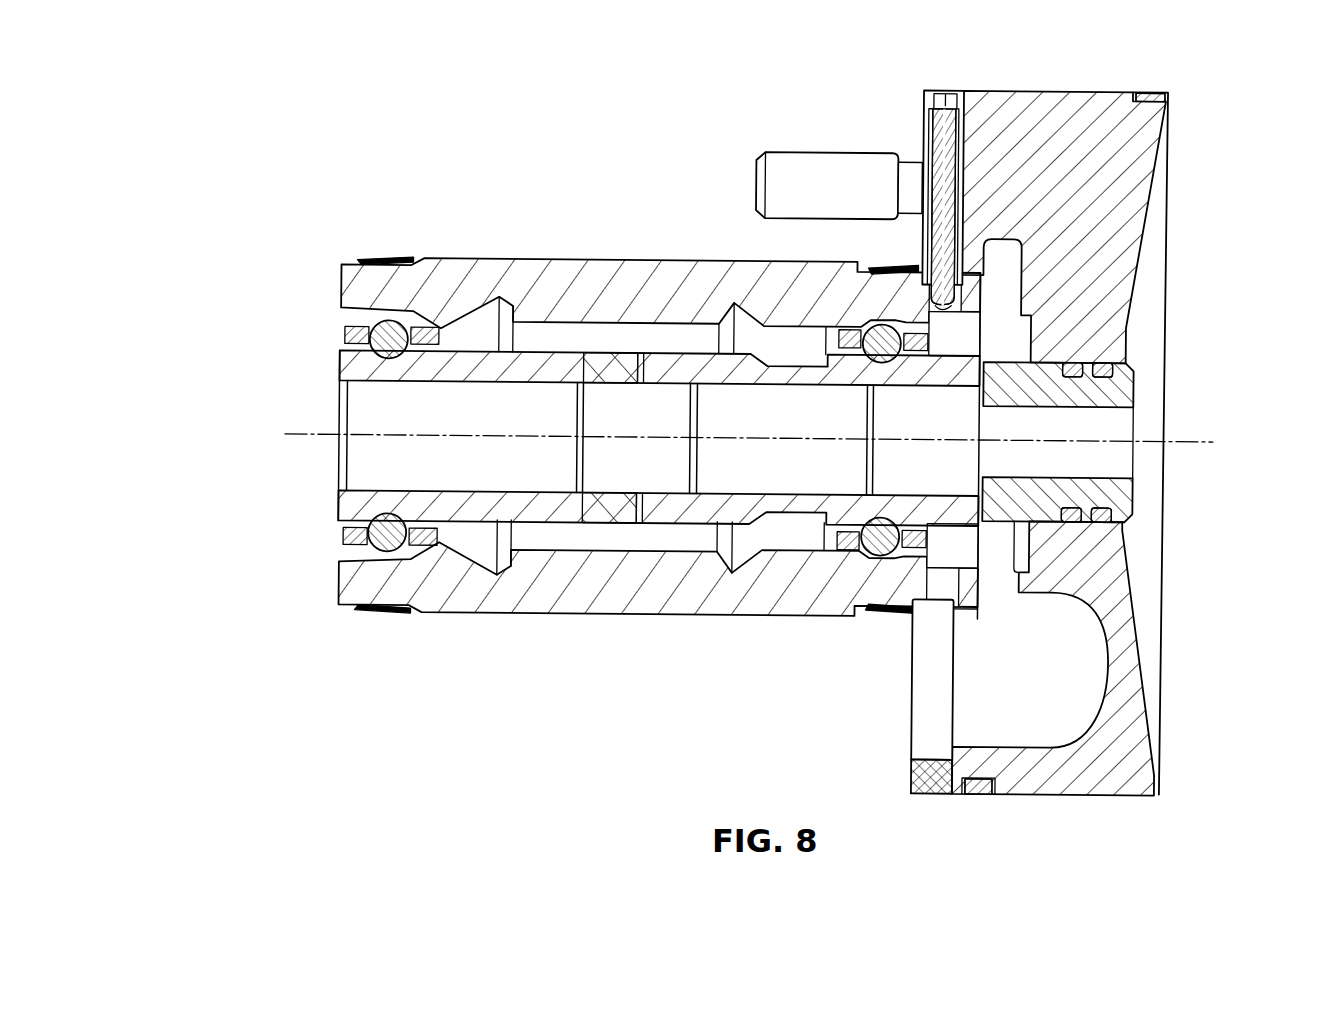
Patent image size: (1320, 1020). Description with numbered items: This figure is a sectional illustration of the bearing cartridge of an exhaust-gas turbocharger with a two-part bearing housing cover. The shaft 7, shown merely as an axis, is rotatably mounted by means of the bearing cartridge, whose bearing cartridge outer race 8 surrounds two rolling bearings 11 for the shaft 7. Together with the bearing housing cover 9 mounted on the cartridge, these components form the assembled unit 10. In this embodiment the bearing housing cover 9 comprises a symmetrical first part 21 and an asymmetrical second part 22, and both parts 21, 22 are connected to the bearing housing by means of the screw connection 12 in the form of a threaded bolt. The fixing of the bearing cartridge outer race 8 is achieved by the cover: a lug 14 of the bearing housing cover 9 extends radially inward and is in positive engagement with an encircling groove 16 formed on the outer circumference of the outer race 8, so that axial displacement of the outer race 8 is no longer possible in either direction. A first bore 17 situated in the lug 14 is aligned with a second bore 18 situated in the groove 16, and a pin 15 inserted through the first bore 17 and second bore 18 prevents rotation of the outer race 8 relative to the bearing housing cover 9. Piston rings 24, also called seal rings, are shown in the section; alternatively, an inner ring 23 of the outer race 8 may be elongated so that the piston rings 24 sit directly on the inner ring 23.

The shaft 7 is at (322, 438).
The bearing cartridge outer race 8 is at (452, 614).
The bearing housing cover 9 is at (1087, 141).
The assembled unit 10 is at (715, 408).
The rolling bearings 11 is at (385, 547).
The screw connection 12 is at (771, 176).
The lug 14 is at (918, 267).
The pin 15 is at (934, 137).
The encircling groove 16 is at (937, 612).
The first bore 17 is at (955, 203).
The second bore 18 is at (948, 302).
The first part 21 is at (1130, 773).
The second part 22 is at (920, 777).
The inner ring 23 is at (666, 512).
The piston rings 24 is at (1068, 372).